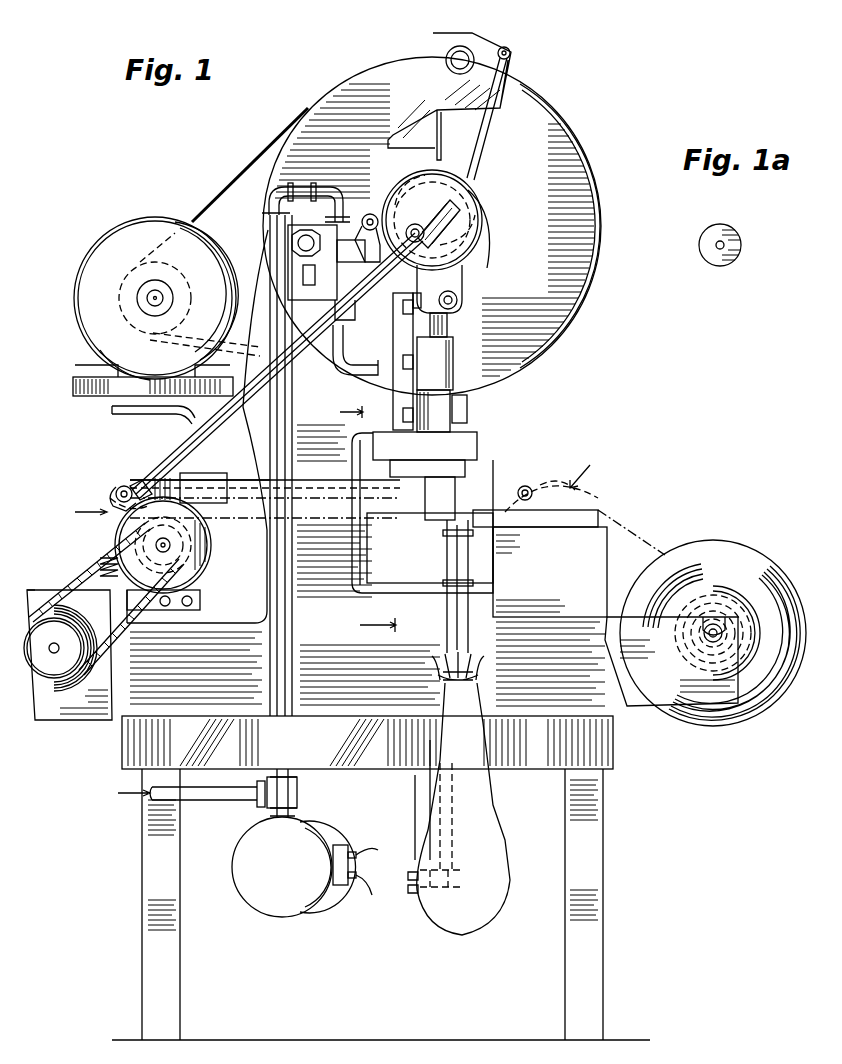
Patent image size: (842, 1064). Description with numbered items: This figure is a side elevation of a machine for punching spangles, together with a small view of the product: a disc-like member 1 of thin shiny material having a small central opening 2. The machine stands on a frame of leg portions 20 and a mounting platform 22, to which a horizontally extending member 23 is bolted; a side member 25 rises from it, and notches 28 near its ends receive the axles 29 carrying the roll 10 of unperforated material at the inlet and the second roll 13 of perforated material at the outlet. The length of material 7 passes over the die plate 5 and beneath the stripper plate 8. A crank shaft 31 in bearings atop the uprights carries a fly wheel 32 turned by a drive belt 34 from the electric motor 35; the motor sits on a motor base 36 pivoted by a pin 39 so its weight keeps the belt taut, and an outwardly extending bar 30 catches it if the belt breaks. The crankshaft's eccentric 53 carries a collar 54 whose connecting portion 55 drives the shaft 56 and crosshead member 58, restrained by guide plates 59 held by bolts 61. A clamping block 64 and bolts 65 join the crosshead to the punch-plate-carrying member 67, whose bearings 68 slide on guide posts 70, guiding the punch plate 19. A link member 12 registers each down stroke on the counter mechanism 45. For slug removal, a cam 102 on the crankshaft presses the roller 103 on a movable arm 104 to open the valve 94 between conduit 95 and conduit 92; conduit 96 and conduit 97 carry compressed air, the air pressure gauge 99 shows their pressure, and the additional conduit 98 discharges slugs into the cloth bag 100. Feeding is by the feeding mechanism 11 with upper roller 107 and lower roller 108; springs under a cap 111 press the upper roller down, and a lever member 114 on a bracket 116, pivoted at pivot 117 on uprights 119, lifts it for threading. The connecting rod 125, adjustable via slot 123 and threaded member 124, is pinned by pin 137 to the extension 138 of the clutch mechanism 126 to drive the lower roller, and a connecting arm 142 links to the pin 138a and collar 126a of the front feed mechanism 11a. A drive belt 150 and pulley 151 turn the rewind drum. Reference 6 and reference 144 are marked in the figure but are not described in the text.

In FIG. 1A, the disc-like member 1 is at (715, 262).
In FIG. 1A, the opening 2 is at (716, 247).
In FIG. 1, the die plate 5 is at (605, 527).
In FIG. 1, the section line 6 is at (361, 517).
In FIG. 1, the length of material 7 is at (640, 522).
In FIG. 1, the stripper plate 8 is at (538, 528).
In FIG. 1, the roll 10 is at (733, 545).
In FIG. 1, the feeding mechanism 11 is at (80, 511).
In FIG. 1, the feed mechanism 11a is at (602, 467).
In FIG. 1, the link member 12 is at (490, 140).
In FIG. 1, the second roll 13 is at (35, 588).
In FIG. 1, the punch plate 19 is at (368, 466).
In FIG. 1, the leg portions 20 is at (604, 818).
In FIG. 1, the mounting platform 22 is at (613, 752).
In FIG. 1, the horizontally extending member 23 is at (103, 722).
In FIG. 1, the side member 25 is at (267, 560).
In FIG. 1, the notches 28 is at (722, 620).
In FIG. 1, the axles 29 is at (695, 640).
In FIG. 1, the outwardly extending bar 30 is at (112, 410).
In FIG. 1, the crank shaft 31 is at (460, 230).
In FIG. 1, the fly wheel 32 is at (560, 122).
In FIG. 1, the drive belt 34 is at (248, 172).
In FIG. 1, the electric motor 35 is at (130, 220).
In FIG. 1, the motor base 36 is at (73, 388).
In FIG. 1, the pin 39 is at (302, 465).
In FIG. 1, the counter mechanism 45 is at (460, 32).
In FIG. 1, the eccentric 53 is at (440, 200).
In FIG. 1, the collar 54 is at (460, 193).
In FIG. 1, the connecting portion 55 is at (462, 290).
In FIG. 1, the shaft 56 is at (448, 330).
In FIG. 1, the crosshead member 58 is at (455, 355).
In FIG. 1, the guide plates 59 is at (393, 330).
In FIG. 1, the bolts 61 is at (403, 307).
In FIG. 1, the clamping block 64 is at (452, 425).
In FIG. 1, the bolts 65 is at (467, 408).
In FIG. 1, the punch-plate-carrying member 67 is at (478, 445).
In FIG. 1, the bearings 68 is at (427, 488).
In FIG. 1, the guide posts 70 is at (425, 528).
In FIG. 1, the conduit 92 is at (355, 350).
In FIG. 1, the valve 94 is at (302, 288).
In FIG. 1, the conduit 95 is at (302, 180).
In FIG. 1, the conduit 96 is at (270, 232).
In FIG. 1, the conduit 97 is at (205, 802).
In FIG. 1, the additional conduit 98 is at (447, 622).
In FIG. 1, the air pressure gauge 99 is at (280, 920).
In FIG. 1, the cloth bag 100 is at (485, 830).
In FIG. 1, the cam 102 is at (488, 240).
In FIG. 1, the roller 103 is at (368, 215).
In FIG. 1, the movable arm 104 is at (412, 300).
In FIG. 1, the upper roller 107 is at (140, 525).
In FIG. 1, the lower roller 108 is at (180, 555).
In FIG. 1, the cap 111 is at (136, 480).
In FIG. 1, the lever member 114 is at (360, 495).
In FIG. 1, the bracket 116 is at (215, 475).
In FIG. 1, the pivot 117 is at (185, 515).
In FIG. 1, the uprights 119 is at (200, 605).
In FIG. 1, the slot 123 is at (430, 195).
In FIG. 1, the threaded member 124 is at (455, 215).
In FIG. 1, the connecting rod 125 is at (180, 444).
In FIG. 1, the clutch mechanism 126 is at (205, 578).
In FIG. 1, the collar 126a is at (595, 492).
In FIG. 1, the pin 137 is at (116, 489).
In FIG. 1, the extension 138 is at (114, 495).
In FIG. 1, the pin 138a is at (545, 472).
In FIG. 1, the connecting arm 142 is at (520, 486).
In FIG. 1, the spring 144 is at (112, 578).
In FIG. 1, the drive belt 150 is at (65, 585).
In FIG. 1, the pulley 151 is at (62, 700).